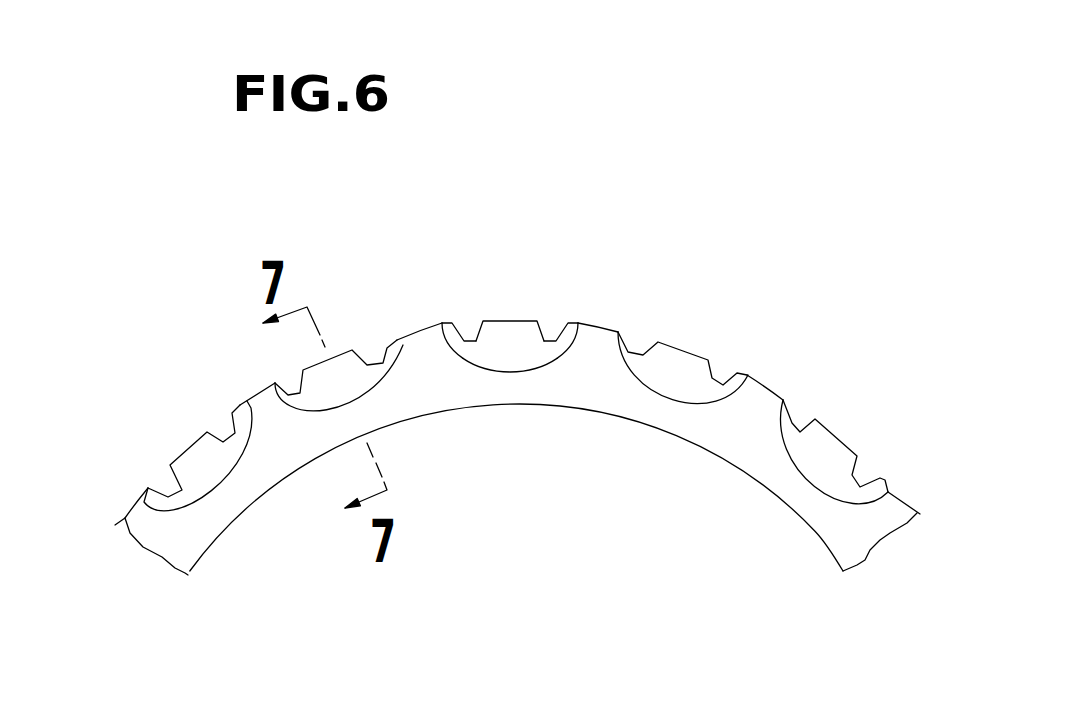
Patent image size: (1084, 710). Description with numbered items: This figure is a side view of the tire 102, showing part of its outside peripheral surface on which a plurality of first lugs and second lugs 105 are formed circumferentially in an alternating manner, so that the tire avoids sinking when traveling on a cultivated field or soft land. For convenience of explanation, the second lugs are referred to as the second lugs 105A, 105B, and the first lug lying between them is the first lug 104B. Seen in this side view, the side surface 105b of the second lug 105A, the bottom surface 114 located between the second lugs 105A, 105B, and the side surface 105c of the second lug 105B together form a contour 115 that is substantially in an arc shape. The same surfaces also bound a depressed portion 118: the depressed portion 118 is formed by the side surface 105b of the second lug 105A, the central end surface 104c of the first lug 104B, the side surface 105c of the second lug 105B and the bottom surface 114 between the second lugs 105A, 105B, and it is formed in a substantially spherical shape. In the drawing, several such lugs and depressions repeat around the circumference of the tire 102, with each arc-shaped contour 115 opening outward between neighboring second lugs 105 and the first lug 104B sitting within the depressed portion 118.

The tire 102 is at (215, 323).
The second lug 105 is at (257, 407).
The second lug 105A is at (423, 335).
The second lug 105B is at (594, 352).
The side surface 105b is at (462, 326).
The side surface 105c is at (568, 330).
The first lug 104B is at (507, 320).
The central end surface 104c is at (517, 331).
The bottom surface 114 is at (492, 363).
The contour 115 is at (548, 371).
The depressed portion 118 is at (335, 390).